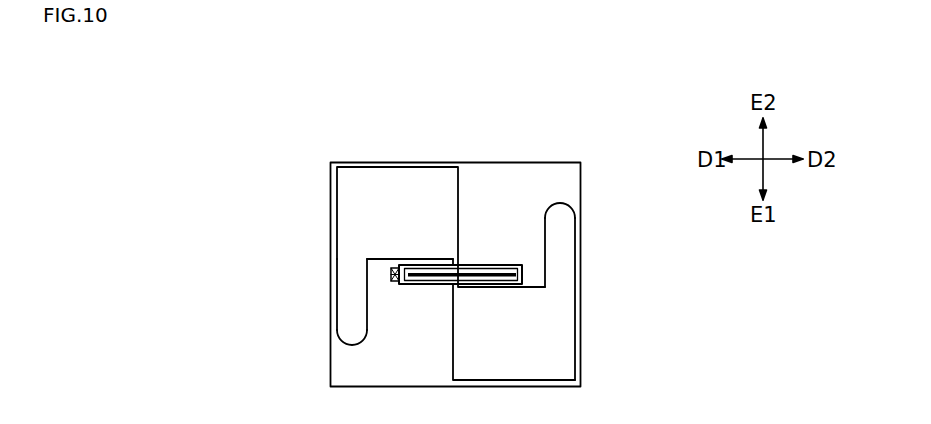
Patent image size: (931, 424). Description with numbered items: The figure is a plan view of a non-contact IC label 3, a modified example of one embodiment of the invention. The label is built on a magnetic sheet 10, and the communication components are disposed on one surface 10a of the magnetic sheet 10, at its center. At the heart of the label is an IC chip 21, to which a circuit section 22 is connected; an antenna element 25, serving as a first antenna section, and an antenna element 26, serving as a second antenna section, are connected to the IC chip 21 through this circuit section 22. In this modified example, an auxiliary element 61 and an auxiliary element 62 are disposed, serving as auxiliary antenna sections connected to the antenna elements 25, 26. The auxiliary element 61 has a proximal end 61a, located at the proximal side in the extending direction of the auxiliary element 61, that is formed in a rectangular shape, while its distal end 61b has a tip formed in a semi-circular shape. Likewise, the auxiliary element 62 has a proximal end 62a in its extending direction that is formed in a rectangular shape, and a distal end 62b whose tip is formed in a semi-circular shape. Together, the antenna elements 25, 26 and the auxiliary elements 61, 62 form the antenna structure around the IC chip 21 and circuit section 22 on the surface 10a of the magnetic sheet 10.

The non-contact IC label 3 is at (327, 158).
The magnetic sheet 10 is at (330, 372).
The one surface 10a is at (357, 372).
The IC chip 21 is at (392, 274).
The circuit section 22 is at (500, 265).
The antenna element 25 is at (355, 213).
The antenna element 26 is at (553, 342).
The auxiliary element 61 is at (262, 247).
The proximal end 61a is at (352, 277).
The distal end 61b is at (352, 335).
The auxiliary element 62 is at (642, 192).
The proximal end 62a is at (562, 273).
The distal end 62b is at (562, 210).